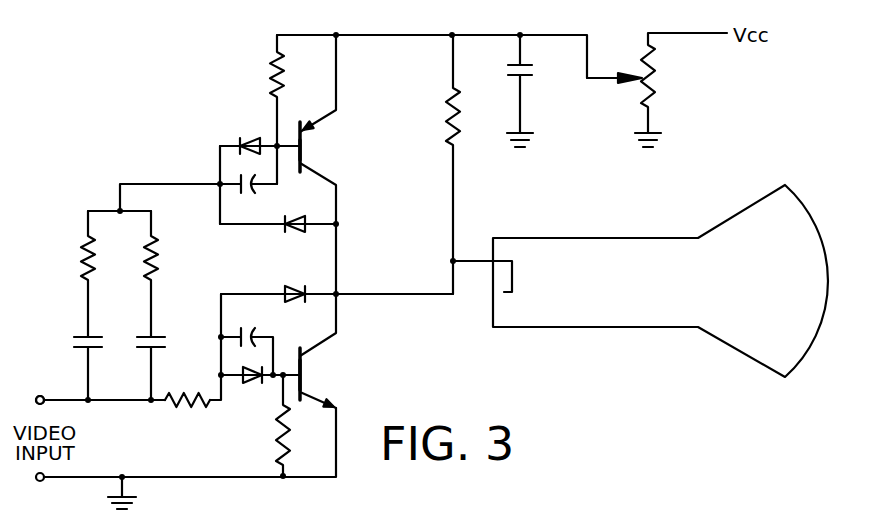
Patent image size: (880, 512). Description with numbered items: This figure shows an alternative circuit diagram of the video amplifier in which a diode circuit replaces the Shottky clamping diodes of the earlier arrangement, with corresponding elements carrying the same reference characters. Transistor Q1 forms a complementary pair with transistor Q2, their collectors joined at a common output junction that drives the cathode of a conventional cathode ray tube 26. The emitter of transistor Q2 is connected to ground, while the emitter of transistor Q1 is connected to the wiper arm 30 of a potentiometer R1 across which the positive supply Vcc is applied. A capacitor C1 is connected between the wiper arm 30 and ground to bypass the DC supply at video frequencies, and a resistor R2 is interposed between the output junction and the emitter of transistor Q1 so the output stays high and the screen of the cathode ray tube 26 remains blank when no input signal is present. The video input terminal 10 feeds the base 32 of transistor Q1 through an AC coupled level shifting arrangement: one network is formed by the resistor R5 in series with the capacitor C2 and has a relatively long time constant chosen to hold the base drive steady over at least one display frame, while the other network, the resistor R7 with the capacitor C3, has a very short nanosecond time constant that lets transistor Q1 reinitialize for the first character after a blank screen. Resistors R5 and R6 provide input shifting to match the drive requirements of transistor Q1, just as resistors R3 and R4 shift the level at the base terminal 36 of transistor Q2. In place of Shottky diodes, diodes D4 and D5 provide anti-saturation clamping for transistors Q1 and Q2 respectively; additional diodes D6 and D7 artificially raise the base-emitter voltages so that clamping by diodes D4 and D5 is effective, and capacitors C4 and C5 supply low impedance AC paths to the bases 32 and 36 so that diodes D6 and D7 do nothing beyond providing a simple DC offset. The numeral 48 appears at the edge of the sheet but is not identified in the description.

The resistor R6 is at (296, 60).
The base 32 is at (288, 140).
The transistor Q1 is at (315, 152).
The diode D6 is at (262, 138).
The capacitor C4 is at (257, 180).
The diode D4 is at (295, 230).
The diode D5 is at (290, 288).
The capacitor C5 is at (262, 310).
The base terminal 36 is at (292, 366).
The transistor Q2 is at (315, 378).
The diode D7 is at (240, 386).
The resistor R4 is at (276, 432).
The resistor R7 is at (82, 247).
The resistor R5 is at (166, 249).
The capacitor C3 is at (78, 337).
The capacitor C2 is at (156, 345).
The video input terminal 10 is at (41, 380).
The resistor R3 is at (200, 393).
The resistor R2 is at (458, 92).
The capacitor C1 is at (532, 70).
The wiper arm 30 is at (605, 77).
The potentiometer R1 is at (652, 62).
The cathode ray tube 26 is at (705, 330).
The sheet numeral (partially visible) 48 is at (764, 509).